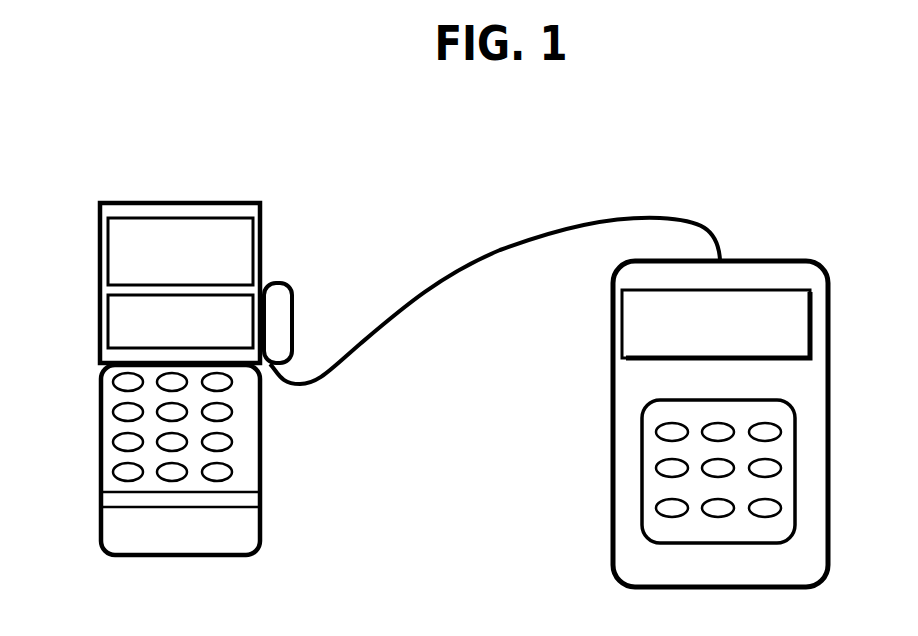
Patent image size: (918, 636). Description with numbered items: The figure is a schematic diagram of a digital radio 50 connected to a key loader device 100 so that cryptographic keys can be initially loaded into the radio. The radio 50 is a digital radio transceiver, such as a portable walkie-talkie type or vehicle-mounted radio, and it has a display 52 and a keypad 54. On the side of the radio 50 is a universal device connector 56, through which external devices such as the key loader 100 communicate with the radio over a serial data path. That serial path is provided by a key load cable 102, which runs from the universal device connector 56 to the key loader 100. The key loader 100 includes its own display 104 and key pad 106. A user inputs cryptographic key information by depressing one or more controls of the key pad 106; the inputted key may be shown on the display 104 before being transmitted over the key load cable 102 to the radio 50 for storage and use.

The radio 50 is at (100, 448).
The display 52 is at (108, 258).
The keypad 54 is at (118, 469).
The universal device connector 56 is at (293, 297).
The key loader device 100 is at (830, 446).
The key load cable 102 is at (462, 274).
The key loader display 104 is at (813, 325).
The key loader key pad 106 is at (781, 510).